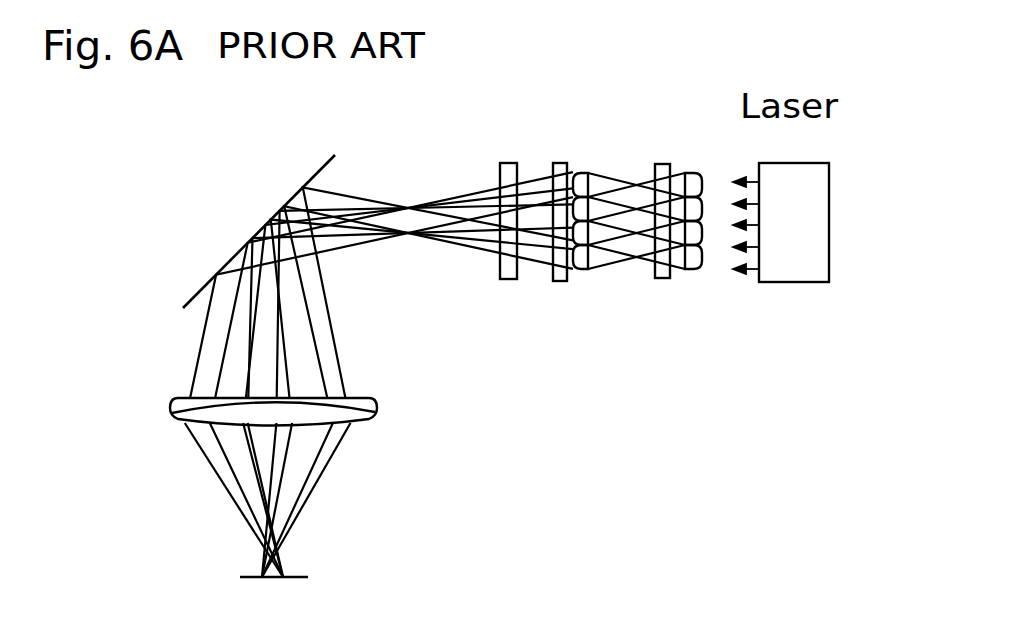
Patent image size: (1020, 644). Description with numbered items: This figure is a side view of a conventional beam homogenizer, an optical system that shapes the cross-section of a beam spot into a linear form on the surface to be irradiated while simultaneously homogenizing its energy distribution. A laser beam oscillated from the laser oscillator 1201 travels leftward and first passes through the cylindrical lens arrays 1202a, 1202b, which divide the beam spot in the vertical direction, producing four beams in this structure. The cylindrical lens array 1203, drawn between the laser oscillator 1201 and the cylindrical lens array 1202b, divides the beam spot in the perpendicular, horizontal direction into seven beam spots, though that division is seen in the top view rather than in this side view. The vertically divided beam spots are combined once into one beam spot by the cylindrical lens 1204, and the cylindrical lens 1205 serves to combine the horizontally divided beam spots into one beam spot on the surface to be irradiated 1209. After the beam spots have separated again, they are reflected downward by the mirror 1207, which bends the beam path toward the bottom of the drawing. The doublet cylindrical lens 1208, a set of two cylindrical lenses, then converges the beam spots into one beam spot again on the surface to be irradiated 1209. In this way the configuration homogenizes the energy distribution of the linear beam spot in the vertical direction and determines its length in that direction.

The laser oscillator 1201 is at (770, 283).
The cylindrical lens array 1202a is at (700, 270).
The cylindrical lens array 1202b is at (579, 172).
The cylindrical lens array 1203 is at (663, 279).
The cylindrical lens 1204 is at (557, 281).
The cylindrical lens 1205 is at (503, 280).
The mirror 1207 is at (258, 232).
The doublet cylindrical lens 1208 is at (360, 424).
The surface to be irradiated 1209 is at (240, 577).